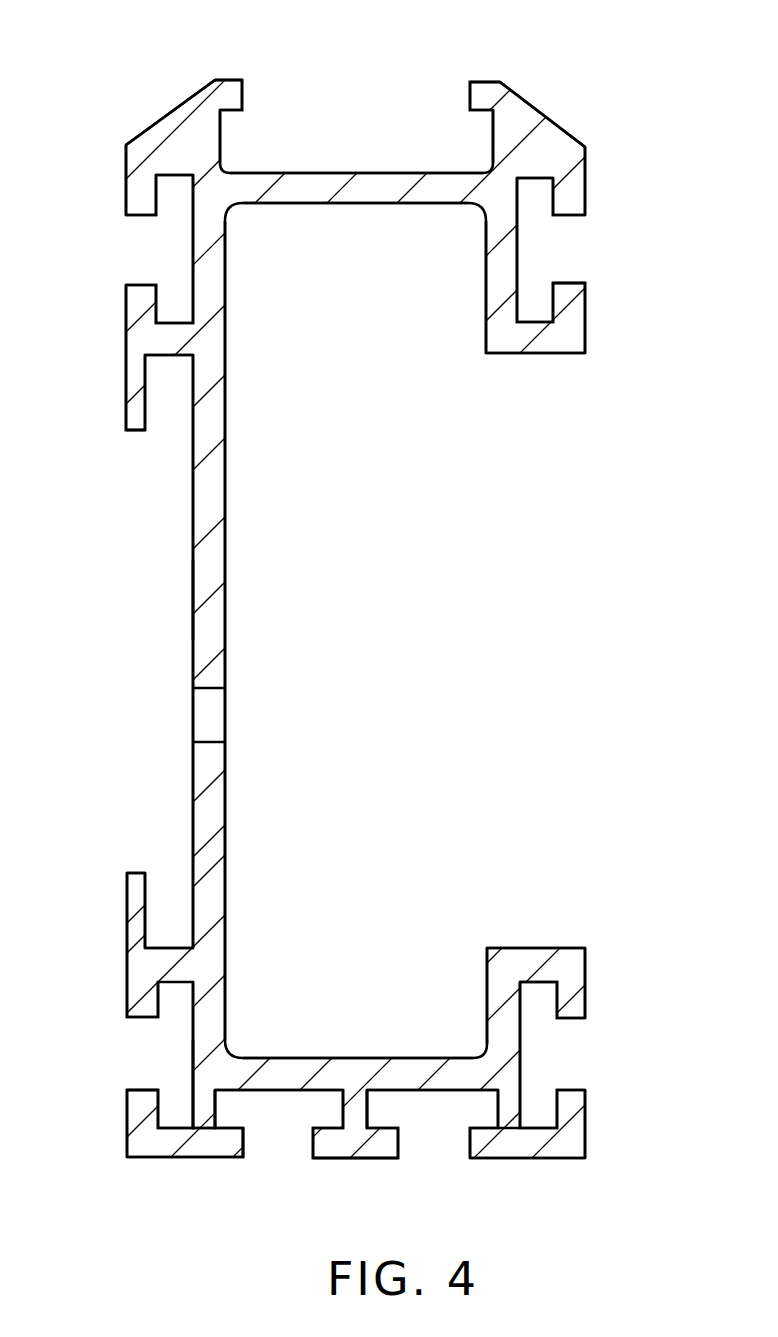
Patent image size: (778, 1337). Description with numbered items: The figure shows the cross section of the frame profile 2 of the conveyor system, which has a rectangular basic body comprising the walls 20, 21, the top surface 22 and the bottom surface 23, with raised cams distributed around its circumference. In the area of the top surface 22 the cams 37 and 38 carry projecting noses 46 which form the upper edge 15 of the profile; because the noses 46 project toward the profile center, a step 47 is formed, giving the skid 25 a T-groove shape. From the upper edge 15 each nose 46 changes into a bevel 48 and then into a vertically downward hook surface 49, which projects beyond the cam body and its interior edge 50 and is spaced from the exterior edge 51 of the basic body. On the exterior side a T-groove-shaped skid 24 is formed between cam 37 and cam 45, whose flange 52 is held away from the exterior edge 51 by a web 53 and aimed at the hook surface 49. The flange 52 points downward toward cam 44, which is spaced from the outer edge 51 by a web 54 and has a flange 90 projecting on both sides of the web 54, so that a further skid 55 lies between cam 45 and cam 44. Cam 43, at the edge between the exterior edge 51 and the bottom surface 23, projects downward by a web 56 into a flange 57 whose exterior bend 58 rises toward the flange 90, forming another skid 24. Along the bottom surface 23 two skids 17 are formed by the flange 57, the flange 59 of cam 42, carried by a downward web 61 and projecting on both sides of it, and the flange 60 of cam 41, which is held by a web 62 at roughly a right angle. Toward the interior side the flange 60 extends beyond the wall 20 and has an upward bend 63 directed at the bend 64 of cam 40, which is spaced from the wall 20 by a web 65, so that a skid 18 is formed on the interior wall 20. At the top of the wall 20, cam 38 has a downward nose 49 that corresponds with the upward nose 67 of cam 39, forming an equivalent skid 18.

The frame profile 2 is at (607, 605).
The upper edge of the profile 15 is at (213, 80).
The skid 17 is at (290, 1135).
The skid 18 is at (532, 253).
The wall 20 is at (487, 263).
The wall 21 is at (225, 470).
The top surface 22 is at (392, 205).
The bottom surface 23 is at (350, 1055).
The skid 24 is at (172, 244).
The skid 25 is at (340, 148).
The cam 37 is at (170, 122).
The cam 38 is at (548, 128).
The cam 39 is at (585, 355).
The cam 40 is at (587, 948).
The cam 41 is at (587, 1160).
The cam 42 is at (320, 1160).
The cam 43 is at (135, 1160).
The cam 44 is at (128, 876).
The cam 45 is at (133, 430).
The nose 46 is at (230, 92).
The step 47 is at (240, 112).
The bevel 48 is at (137, 137).
The hook surface 49 is at (137, 203).
The interior edge 50 is at (173, 175).
The exterior edge 51 is at (193, 503).
The flange 52 is at (137, 312).
The web 53 is at (177, 334).
The web 54 is at (165, 955).
The skid 55 is at (178, 593).
The web 56 is at (205, 1100).
The flange 57 is at (200, 1160).
The bend 58 is at (140, 1106).
The flange 59 is at (383, 1147).
The flange 60 is at (553, 1147).
The web 61 is at (360, 1117).
The web 62 is at (510, 1108).
The bend 63 is at (572, 1102).
The bend 64 is at (580, 1000).
The web 65 is at (520, 962).
The nose 67 is at (573, 307).
The flange 90 is at (137, 922).